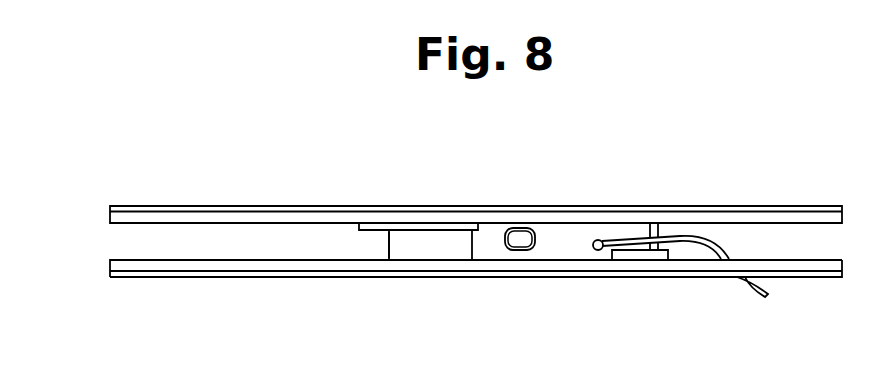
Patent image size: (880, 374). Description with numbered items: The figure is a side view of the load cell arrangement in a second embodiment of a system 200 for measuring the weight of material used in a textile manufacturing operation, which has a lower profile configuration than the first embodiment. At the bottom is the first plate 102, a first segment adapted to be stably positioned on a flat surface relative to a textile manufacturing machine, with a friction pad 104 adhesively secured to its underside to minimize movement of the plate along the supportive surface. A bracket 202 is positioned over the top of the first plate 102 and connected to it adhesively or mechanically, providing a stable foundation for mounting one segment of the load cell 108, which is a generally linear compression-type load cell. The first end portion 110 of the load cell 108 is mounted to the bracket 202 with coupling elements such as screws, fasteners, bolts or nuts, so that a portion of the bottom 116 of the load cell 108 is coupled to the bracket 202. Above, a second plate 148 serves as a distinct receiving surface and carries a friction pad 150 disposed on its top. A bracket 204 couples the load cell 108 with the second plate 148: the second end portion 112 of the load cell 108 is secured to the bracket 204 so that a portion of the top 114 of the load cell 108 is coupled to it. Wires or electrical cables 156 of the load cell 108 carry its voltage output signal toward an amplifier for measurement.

The system 200 is at (623, 148).
The friction pad 150 is at (774, 186).
The second plate 148 is at (92, 211).
The first plate 102 is at (105, 275).
The friction pad 104 is at (712, 287).
The bottom 116 is at (507, 262).
The bracket 204 is at (382, 228).
The load cell 108 is at (458, 238).
The second end portion 112 is at (389, 246).
The top 114 is at (541, 231).
The first end portion 110 is at (661, 230).
The bracket 202 is at (627, 261).
The electrical cables 156 is at (750, 293).